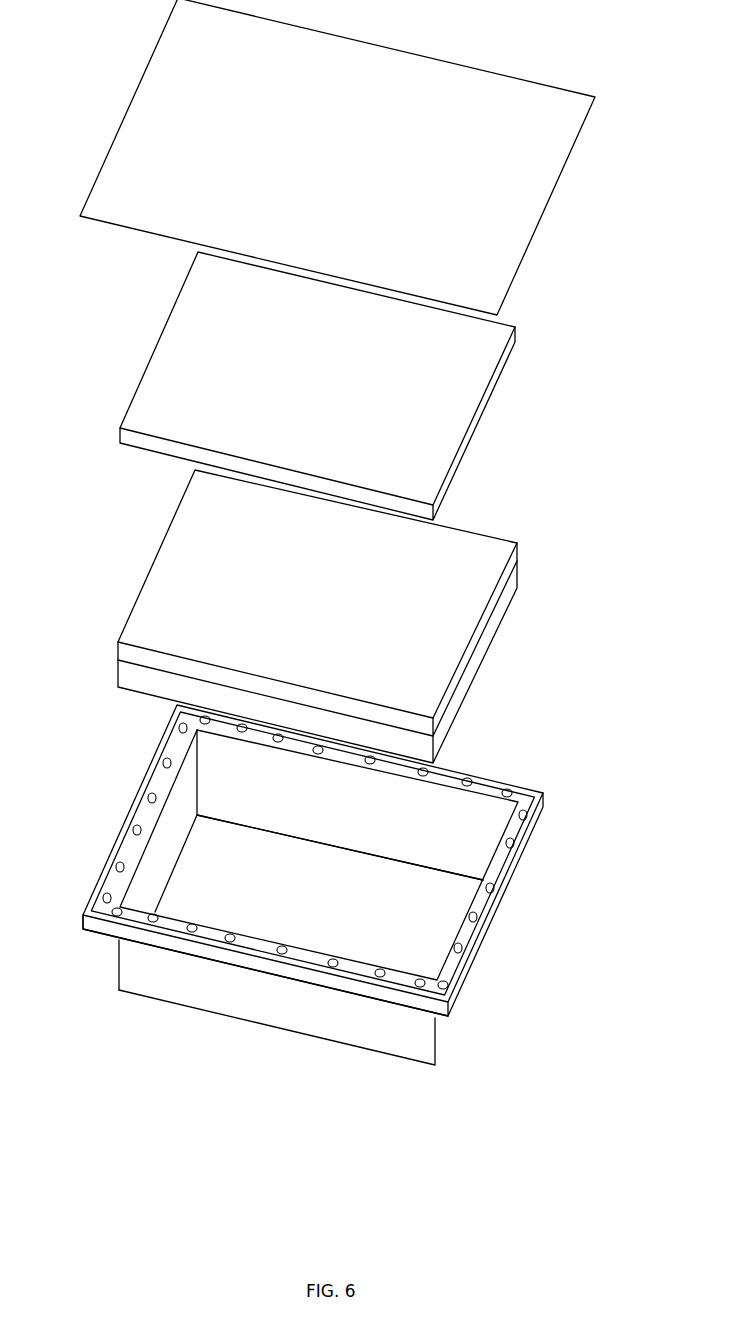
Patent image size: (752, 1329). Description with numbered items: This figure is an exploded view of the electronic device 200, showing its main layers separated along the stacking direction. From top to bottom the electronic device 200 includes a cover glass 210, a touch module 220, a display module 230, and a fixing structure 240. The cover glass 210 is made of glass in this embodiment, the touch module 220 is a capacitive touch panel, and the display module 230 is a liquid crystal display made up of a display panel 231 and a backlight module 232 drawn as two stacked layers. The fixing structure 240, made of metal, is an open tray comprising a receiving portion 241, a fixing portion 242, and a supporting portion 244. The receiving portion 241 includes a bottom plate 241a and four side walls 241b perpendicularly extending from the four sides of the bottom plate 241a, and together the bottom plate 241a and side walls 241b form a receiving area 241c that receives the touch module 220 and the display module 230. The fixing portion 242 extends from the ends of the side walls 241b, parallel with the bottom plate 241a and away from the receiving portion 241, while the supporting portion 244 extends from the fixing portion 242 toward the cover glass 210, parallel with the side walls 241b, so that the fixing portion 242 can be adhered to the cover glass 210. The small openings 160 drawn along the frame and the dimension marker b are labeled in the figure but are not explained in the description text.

The electronic device 200 is at (77, 1115).
The cover glass 210 is at (550, 195).
The touch module 220 is at (483, 417).
The display module 230 is at (385, 616).
The display panel 231 is at (490, 556).
The backlight module 232 is at (354, 662).
The fixing structure 240 is at (339, 920).
The receiving portion 241 is at (265, 933).
The bottom plate 241a is at (293, 1031).
The side walls 241b is at (198, 990).
The receiving area 241c is at (392, 910).
The fixing portion 242 is at (102, 936).
The supporting portion 244 is at (347, 860).
The mounting hole 160 is at (514, 860).
The frame width b is at (511, 845).